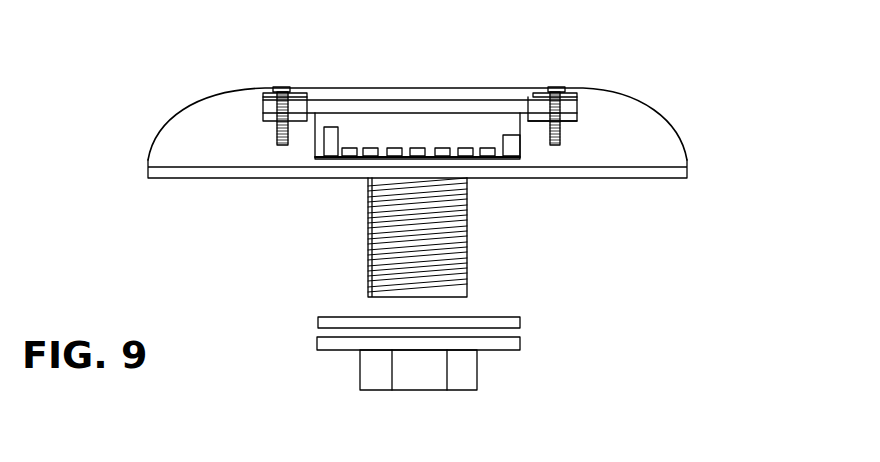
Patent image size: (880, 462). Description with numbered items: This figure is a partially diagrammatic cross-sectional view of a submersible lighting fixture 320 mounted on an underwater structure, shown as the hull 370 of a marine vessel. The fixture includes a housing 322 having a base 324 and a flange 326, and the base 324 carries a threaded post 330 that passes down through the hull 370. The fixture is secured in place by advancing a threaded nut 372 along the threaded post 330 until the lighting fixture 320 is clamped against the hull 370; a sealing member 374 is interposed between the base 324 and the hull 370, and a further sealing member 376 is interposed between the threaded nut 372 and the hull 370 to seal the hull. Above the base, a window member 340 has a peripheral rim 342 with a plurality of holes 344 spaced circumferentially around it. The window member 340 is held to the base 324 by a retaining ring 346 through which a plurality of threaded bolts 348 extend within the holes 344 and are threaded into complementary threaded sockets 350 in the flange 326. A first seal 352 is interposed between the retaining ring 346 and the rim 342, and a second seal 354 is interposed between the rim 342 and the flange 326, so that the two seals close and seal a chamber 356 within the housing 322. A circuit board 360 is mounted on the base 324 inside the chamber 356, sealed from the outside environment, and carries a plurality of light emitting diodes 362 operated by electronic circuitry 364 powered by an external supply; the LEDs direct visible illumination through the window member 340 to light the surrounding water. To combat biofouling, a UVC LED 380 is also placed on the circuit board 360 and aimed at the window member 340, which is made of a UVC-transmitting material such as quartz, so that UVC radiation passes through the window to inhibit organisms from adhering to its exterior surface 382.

The submersible lighting fixture 320 is at (416, 98).
The housing 322 is at (380, 98).
The base 324 is at (392, 201).
The flange 326 is at (393, 98).
The threaded post 330 is at (429, 237).
The window member 340 is at (420, 58).
The peripheral rim 342 is at (284, 81).
The holes 344 is at (598, 77).
The retaining ring 346 is at (210, 115).
The threaded bolts 348 is at (562, 85).
The threaded sockets 350 is at (570, 127).
The first seal 352 is at (267, 92).
The second seal 354 is at (418, 138).
The chamber 356 is at (425, 136).
The circuit board 360 is at (520, 158).
The light emitting diodes 362 is at (487, 148).
The electronic circuitry 364 is at (418, 168).
The hull 370 is at (507, 217).
The threaded nut 372 is at (463, 367).
The sealing member 374 is at (235, 177).
The further sealing member 376 is at (318, 322).
The UVC LED 380 is at (423, 110).
The exterior surface 382 is at (420, 58).